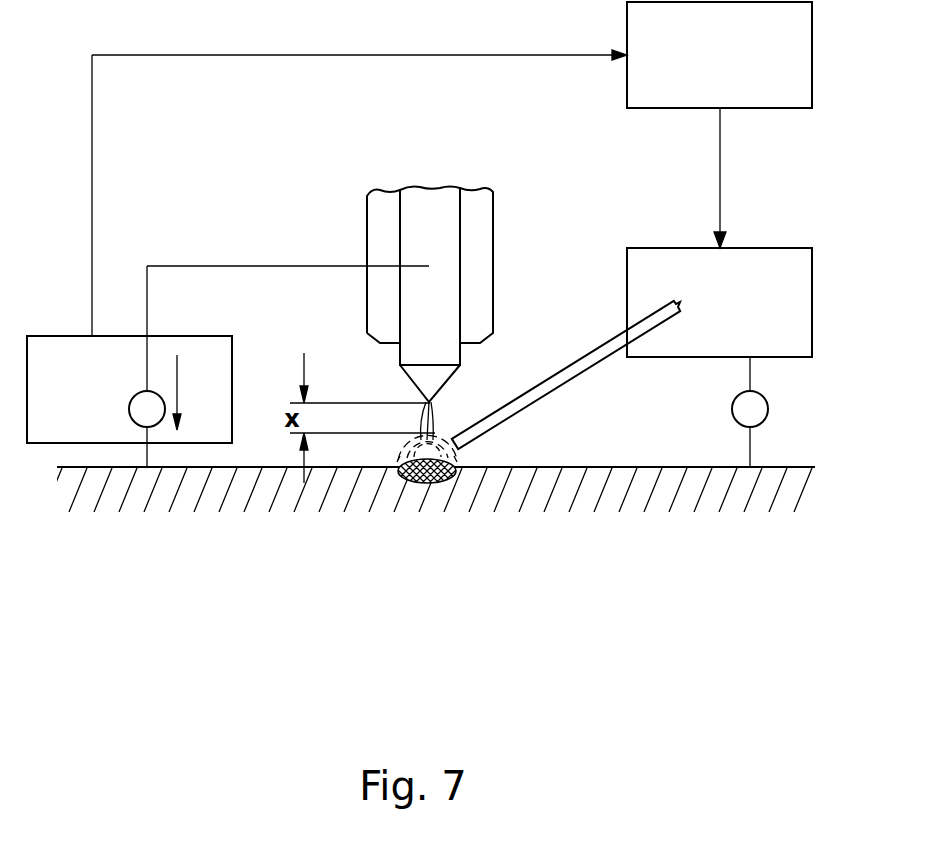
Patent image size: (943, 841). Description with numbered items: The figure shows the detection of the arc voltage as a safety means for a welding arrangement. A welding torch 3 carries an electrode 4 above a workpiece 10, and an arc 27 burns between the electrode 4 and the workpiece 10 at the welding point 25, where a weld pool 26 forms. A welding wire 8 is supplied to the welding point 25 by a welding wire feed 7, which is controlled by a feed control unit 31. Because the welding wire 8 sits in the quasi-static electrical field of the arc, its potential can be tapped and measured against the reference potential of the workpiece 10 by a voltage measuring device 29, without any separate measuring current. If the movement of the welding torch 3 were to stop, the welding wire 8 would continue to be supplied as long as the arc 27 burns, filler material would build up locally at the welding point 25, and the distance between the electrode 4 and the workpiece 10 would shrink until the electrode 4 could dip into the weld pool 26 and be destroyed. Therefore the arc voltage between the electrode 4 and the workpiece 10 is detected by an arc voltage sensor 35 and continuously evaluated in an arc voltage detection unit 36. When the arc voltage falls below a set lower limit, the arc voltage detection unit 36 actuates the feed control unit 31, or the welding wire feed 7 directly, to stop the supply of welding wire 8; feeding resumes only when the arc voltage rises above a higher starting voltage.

The welding torch 3 is at (473, 230).
The electrode 4 is at (423, 218).
The welding wire feed 7 is at (795, 247).
The welding wire 8 is at (586, 362).
The workpiece 10 is at (680, 498).
The welding point 25 is at (425, 495).
The weld pool 26 is at (445, 480).
The arc 27 is at (435, 420).
The voltage measuring device 29 is at (770, 407).
The feed control unit 31 is at (702, 71).
The arc voltage sensor 35 is at (130, 397).
The arc voltage detection unit 36 is at (52, 334).